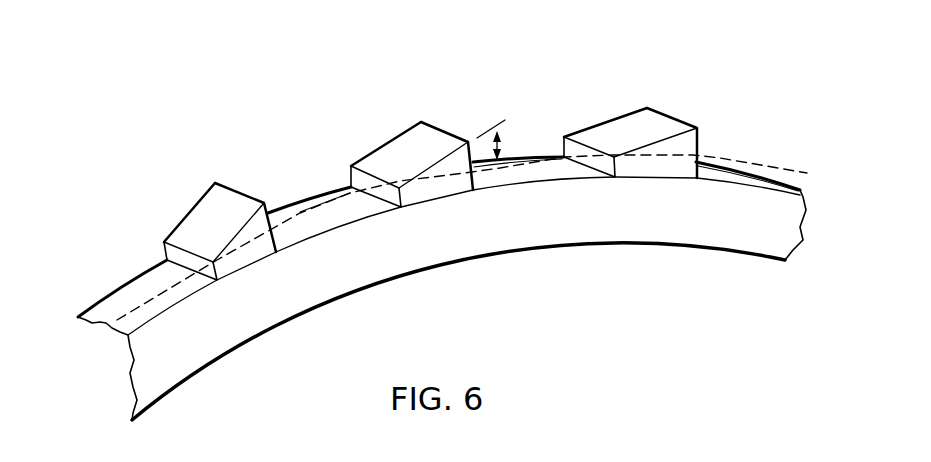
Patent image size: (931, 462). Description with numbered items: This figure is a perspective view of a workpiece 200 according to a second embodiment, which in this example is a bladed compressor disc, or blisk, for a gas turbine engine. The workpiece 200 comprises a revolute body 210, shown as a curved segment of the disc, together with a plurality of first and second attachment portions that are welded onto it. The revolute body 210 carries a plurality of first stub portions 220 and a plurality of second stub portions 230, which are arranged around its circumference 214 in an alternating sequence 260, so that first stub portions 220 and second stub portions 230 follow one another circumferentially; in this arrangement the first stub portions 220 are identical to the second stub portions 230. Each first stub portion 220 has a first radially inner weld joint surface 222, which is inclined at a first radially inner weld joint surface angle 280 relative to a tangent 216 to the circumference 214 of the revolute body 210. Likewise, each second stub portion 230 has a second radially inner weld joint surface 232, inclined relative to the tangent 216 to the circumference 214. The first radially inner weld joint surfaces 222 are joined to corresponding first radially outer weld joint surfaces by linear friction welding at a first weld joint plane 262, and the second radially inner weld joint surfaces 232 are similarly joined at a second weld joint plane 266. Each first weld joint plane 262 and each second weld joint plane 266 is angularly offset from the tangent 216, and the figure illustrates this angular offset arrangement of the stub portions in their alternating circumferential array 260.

The workpiece 200 is at (141, 72).
The revolute body 210 is at (153, 365).
The circumference 214 is at (783, 168).
The tangent 216 is at (522, 155).
The first stub portion 220 is at (175, 253).
The first radially inner weld joint surface 222 is at (192, 225).
The first weld joint plane 262 is at (213, 203).
The alternating sequence 260 is at (310, 116).
The second stub portion 230 is at (350, 178).
The second radially inner weld joint surface 232 is at (402, 150).
The second weld joint plane 266 is at (417, 137).
The first radially inner weld joint surface angle 280 is at (512, 140).